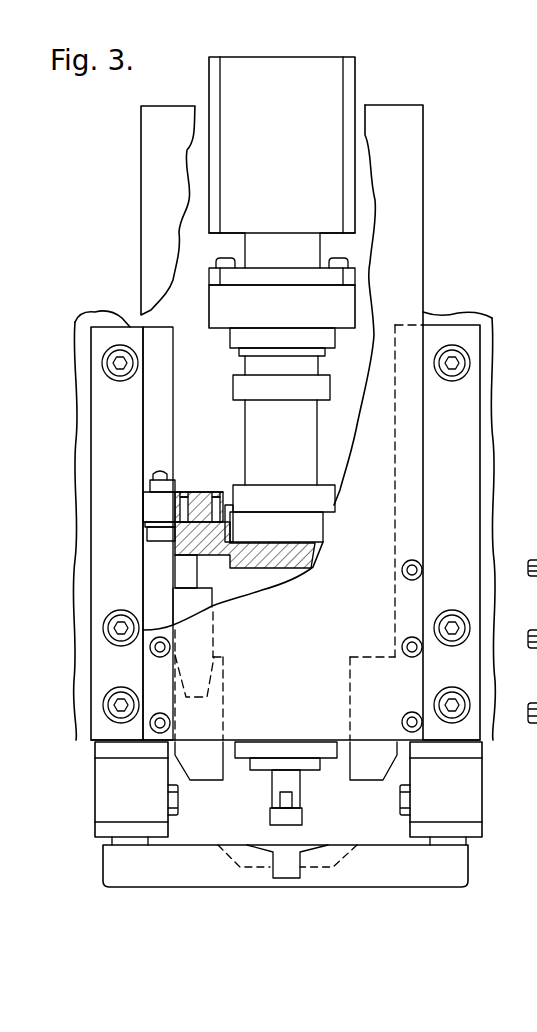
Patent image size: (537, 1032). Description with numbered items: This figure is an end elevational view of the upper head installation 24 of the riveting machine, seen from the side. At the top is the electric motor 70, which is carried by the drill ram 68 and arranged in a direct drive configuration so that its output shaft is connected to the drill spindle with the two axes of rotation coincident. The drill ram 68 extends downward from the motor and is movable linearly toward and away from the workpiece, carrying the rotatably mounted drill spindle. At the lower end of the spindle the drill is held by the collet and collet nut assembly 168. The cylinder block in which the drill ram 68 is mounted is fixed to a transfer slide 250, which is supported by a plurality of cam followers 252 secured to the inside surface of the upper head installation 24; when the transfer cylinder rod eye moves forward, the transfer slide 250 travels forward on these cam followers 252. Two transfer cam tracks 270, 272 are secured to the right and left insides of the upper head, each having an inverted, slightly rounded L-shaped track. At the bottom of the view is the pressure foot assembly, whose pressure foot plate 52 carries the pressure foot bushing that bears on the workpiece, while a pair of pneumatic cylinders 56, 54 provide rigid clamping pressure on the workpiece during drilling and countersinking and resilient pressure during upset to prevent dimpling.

The upper head installation 24 is at (130, 254).
The electric motor 70 is at (310, 90).
The drill ram 68 is at (250, 426).
The transfer slide 250 is at (183, 532).
The cam followers 252 is at (183, 567).
The transfer cam track 270 is at (210, 770).
The transfer cam track 272 is at (368, 770).
The collet and collet nut assembly 168 is at (272, 815).
The pneumatic cylinder 56 is at (100, 783).
The pneumatic cylinder 54 is at (482, 798).
The pressure foot plate 52 is at (376, 880).